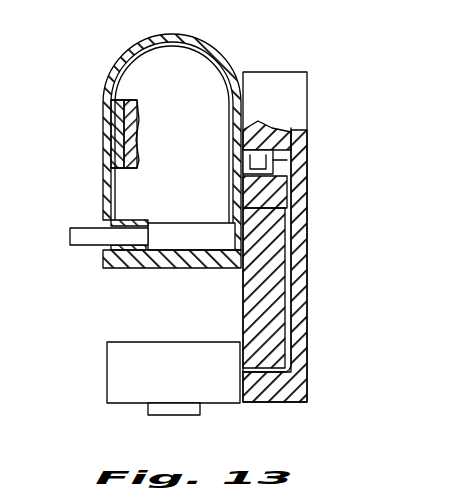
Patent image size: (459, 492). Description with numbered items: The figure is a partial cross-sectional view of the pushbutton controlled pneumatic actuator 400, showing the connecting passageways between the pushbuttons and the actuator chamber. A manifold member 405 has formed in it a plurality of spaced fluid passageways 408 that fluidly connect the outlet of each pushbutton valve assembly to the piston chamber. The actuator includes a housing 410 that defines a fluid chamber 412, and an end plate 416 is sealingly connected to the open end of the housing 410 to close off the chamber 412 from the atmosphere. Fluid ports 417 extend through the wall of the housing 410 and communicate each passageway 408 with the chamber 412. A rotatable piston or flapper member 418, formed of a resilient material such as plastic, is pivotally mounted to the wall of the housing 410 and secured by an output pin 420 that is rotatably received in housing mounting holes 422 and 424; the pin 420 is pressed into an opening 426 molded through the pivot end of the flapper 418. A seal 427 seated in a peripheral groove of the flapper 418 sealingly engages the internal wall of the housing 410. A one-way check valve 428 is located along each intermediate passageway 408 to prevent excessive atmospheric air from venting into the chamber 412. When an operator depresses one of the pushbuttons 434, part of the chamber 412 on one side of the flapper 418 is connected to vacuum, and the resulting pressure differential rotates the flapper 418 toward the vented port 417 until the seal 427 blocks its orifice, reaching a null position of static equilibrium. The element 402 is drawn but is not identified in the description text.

The pushbutton controlled pneumatic actuator 400 is at (307, 243).
The electronics module 402 is at (107, 392).
The manifold member 405 is at (243, 292).
The fluid passageways 408 is at (292, 322).
The housing 410 is at (108, 110).
The fluid chamber 412 is at (178, 76).
The end plate 416 is at (157, 268).
The fluid ports 417 is at (233, 205).
The flapper member 418 is at (113, 80).
The output pin 420 is at (90, 228).
The housing mounting hole 422 is at (100, 238).
The housing mounting hole 424 is at (234, 208).
The opening 426 is at (138, 241).
The seal 427 is at (108, 146).
The one-way check valve 428 is at (270, 133).
The pushbuttons 434 is at (155, 414).